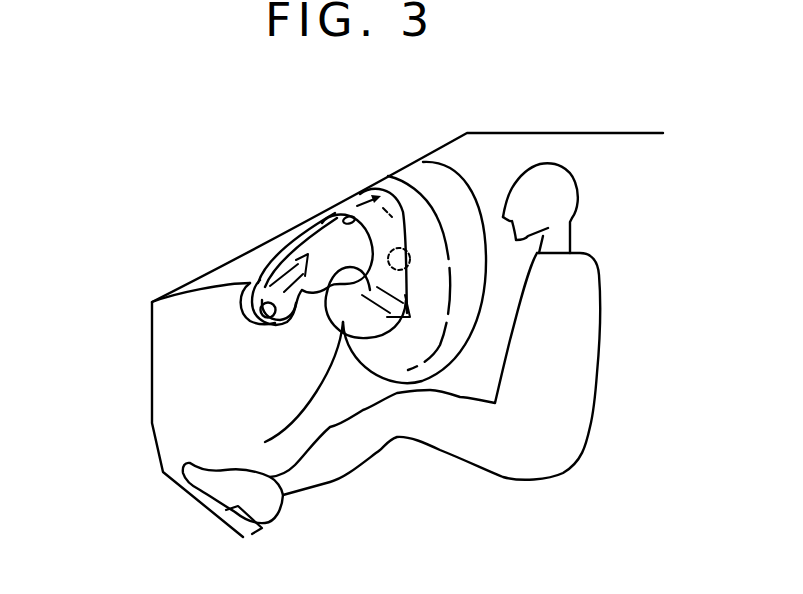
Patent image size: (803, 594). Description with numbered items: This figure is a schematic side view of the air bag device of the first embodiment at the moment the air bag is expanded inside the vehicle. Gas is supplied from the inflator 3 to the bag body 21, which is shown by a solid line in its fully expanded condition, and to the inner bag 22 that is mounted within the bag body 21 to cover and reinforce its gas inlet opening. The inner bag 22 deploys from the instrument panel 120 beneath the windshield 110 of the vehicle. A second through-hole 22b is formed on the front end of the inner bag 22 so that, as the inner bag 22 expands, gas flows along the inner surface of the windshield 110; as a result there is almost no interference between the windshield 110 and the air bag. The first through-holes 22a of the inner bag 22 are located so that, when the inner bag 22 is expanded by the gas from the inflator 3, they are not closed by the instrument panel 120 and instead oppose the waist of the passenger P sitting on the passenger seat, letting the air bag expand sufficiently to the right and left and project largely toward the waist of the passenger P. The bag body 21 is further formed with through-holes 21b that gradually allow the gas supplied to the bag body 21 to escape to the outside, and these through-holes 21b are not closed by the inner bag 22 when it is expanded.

The inflator 3 is at (270, 318).
The bag body 21 is at (458, 170).
The through-holes 21b is at (411, 260).
The inner bag 22 is at (327, 232).
The first through-holes 22a is at (343, 322).
The second through-hole 22b is at (352, 217).
The windshield 110 is at (262, 246).
The instrument panel 120 is at (216, 316).
The passenger P is at (587, 317).